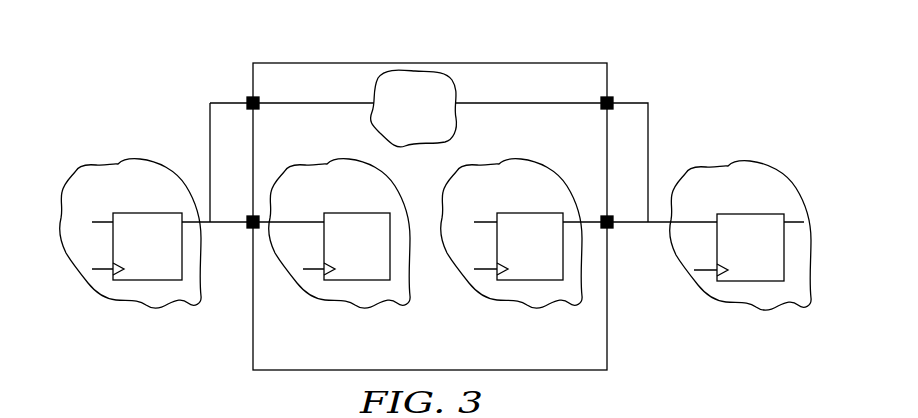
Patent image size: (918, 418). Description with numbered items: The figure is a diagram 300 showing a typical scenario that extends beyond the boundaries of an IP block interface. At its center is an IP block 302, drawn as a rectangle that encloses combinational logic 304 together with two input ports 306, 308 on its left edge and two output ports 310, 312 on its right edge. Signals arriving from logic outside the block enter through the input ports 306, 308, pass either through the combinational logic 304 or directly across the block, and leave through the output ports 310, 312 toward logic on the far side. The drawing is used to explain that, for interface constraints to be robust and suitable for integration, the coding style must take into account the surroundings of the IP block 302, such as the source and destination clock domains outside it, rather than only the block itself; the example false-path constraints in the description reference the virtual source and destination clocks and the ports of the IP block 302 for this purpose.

The diagram 300 is at (448, 197).
The IP block 302 is at (537, 63).
The combinational logic 304 is at (456, 117).
The input port 306 is at (260, 98).
The input port 308 is at (256, 215).
The output port 310 is at (601, 99).
The output port 312 is at (603, 215).